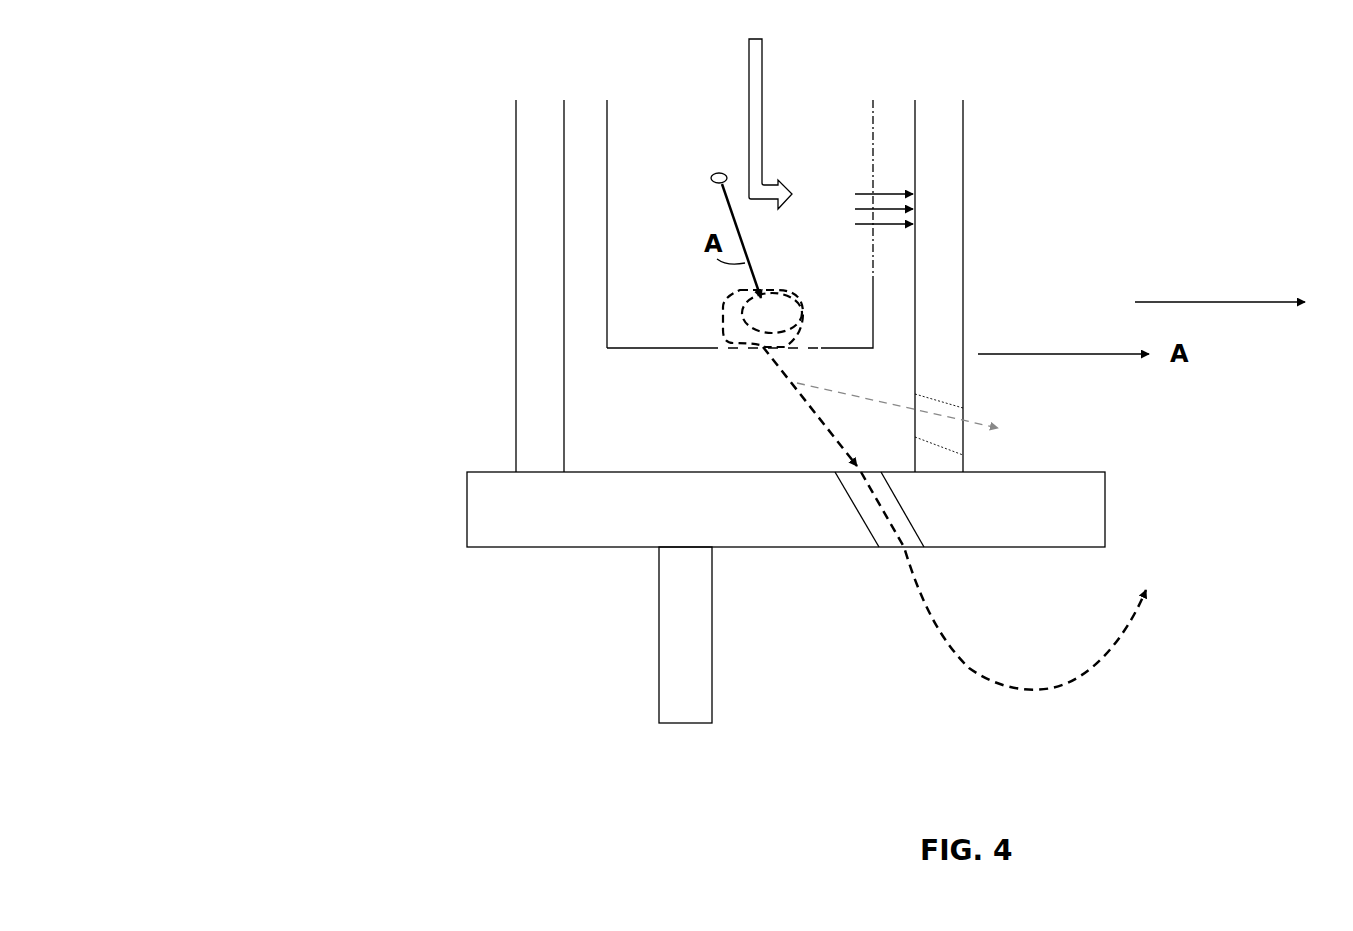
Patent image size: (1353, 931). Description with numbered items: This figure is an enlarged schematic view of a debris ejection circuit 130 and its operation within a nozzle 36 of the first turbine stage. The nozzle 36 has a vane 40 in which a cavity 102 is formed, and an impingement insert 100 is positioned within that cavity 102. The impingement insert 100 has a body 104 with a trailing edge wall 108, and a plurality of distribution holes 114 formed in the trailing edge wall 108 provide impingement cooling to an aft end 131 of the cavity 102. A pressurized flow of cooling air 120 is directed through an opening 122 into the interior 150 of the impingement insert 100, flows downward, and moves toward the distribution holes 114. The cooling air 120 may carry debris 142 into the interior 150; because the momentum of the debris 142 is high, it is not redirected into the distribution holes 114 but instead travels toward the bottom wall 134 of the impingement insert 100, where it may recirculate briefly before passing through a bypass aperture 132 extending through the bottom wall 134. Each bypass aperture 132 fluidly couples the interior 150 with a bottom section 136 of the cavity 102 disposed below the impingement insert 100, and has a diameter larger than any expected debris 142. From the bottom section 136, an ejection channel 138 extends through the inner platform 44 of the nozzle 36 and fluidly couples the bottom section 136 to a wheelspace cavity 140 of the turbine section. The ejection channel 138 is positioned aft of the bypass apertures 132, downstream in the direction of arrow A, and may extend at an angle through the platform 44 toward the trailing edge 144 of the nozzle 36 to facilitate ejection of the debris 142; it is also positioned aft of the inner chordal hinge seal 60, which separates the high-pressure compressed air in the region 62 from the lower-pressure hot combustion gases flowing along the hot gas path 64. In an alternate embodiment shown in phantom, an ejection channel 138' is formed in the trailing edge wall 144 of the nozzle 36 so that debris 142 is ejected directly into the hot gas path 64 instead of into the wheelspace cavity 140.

The nozzle 36 is at (408, 161).
The vane 40 is at (512, 141).
The inner platform 44 is at (465, 520).
The inner chordal hinge seal 60 is at (657, 645).
The region 62 is at (475, 673).
The hot gas path 64 is at (1237, 302).
The impingement insert 100 is at (591, 268).
The cavity 102 is at (563, 390).
The body 104 is at (605, 222).
The trailing edge wall 108 is at (873, 306).
The distribution holes 114 is at (874, 177).
The flow of cooling air 120 is at (749, 72).
The opening 122 is at (811, 98).
The debris ejection circuit 130 is at (736, 392).
The aft end 131 is at (914, 131).
The bypass aperture 132 is at (806, 355).
The bottom wall 134 is at (837, 347).
The bottom section 136 is at (700, 450).
The ejection channel 138 is at (910, 535).
The ejection channel 138' is at (956, 417).
The wheelspace cavity 140 is at (1205, 638).
The debris 142 is at (702, 175).
The trailing edge 144 is at (967, 237).
The interior 150 is at (677, 223).